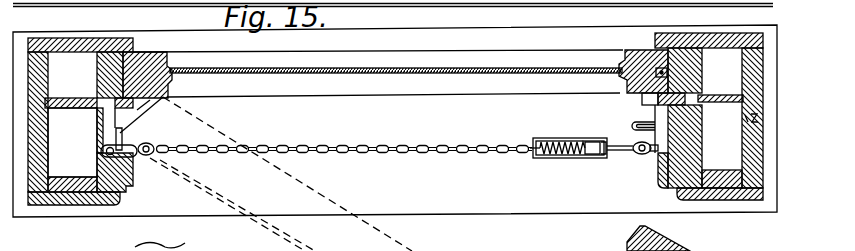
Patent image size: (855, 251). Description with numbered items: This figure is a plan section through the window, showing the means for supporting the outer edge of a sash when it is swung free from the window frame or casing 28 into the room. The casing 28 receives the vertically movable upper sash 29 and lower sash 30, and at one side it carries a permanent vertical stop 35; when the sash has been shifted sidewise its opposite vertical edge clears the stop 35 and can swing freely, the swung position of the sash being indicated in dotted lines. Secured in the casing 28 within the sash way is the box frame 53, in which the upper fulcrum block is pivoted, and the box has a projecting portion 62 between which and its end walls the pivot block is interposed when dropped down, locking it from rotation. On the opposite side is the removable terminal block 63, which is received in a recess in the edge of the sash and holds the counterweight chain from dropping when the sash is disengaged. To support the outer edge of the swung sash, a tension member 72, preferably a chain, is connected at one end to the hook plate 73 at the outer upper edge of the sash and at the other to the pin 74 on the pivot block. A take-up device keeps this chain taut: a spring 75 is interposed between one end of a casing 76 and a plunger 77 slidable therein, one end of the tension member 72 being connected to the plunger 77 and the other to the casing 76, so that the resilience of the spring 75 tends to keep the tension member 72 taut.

The window frame or casing 28 is at (105, 168).
The upper sash 29 is at (482, 85).
The lower sash 30 is at (425, 133).
The vertical stop 35 is at (658, 175).
The box frame 53 is at (97, 125).
The projecting portion of the box 62 is at (122, 135).
The removable terminal block 63 is at (667, 73).
The tension member 72 is at (323, 148).
The hook plate 73 is at (650, 150).
The pin on pivot block 74 is at (147, 153).
The spring 75 is at (560, 153).
The casing of take-up device 76 is at (572, 157).
The plunger 77 is at (588, 158).